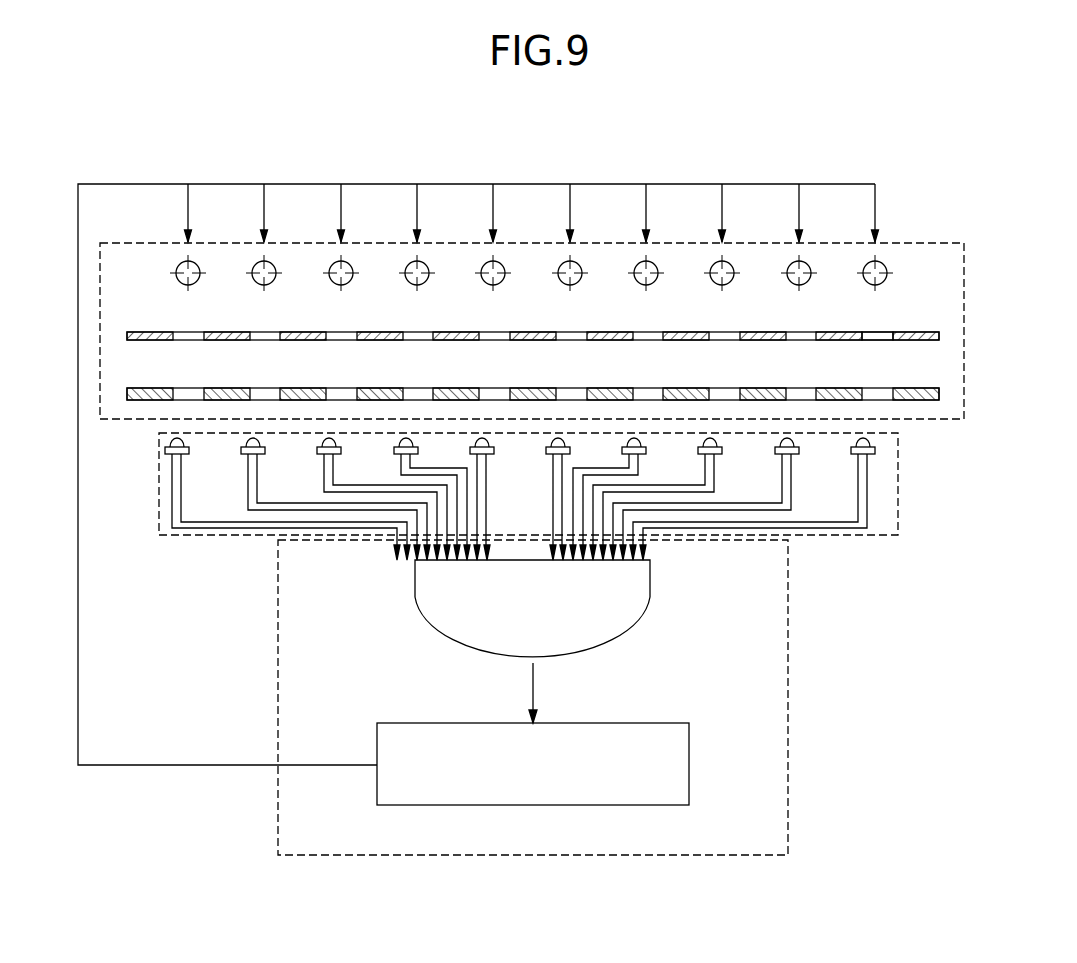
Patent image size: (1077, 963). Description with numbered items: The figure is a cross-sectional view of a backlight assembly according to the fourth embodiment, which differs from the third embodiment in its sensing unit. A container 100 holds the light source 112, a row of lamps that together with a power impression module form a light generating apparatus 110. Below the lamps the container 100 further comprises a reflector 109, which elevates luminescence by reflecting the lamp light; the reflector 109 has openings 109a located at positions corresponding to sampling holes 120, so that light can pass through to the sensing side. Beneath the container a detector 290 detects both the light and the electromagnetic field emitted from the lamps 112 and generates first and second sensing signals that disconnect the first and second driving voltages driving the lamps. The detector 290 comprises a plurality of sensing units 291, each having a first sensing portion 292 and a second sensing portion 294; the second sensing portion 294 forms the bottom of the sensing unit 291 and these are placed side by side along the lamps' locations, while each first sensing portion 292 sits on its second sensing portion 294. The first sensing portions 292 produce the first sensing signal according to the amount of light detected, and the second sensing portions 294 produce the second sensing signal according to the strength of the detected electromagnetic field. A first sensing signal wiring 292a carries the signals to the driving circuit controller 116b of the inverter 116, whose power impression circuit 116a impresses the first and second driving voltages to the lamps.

The container 100 is at (965, 407).
The light generating apparatus 110 is at (886, 262).
The light source 112 is at (888, 284).
The reflector 109 is at (917, 331).
The openings 109a is at (877, 333).
The sampling holes 120 is at (877, 389).
The detector 290 is at (875, 535).
The sensing unit 291 is at (820, 487).
The first sensing portion 292 is at (868, 441).
The second sensing portion 294 is at (868, 457).
The first sensing signal wiring 292a is at (232, 522).
The inverter 116 is at (788, 733).
The driving circuit controller 116b is at (651, 592).
The power impression circuit 116a is at (663, 723).